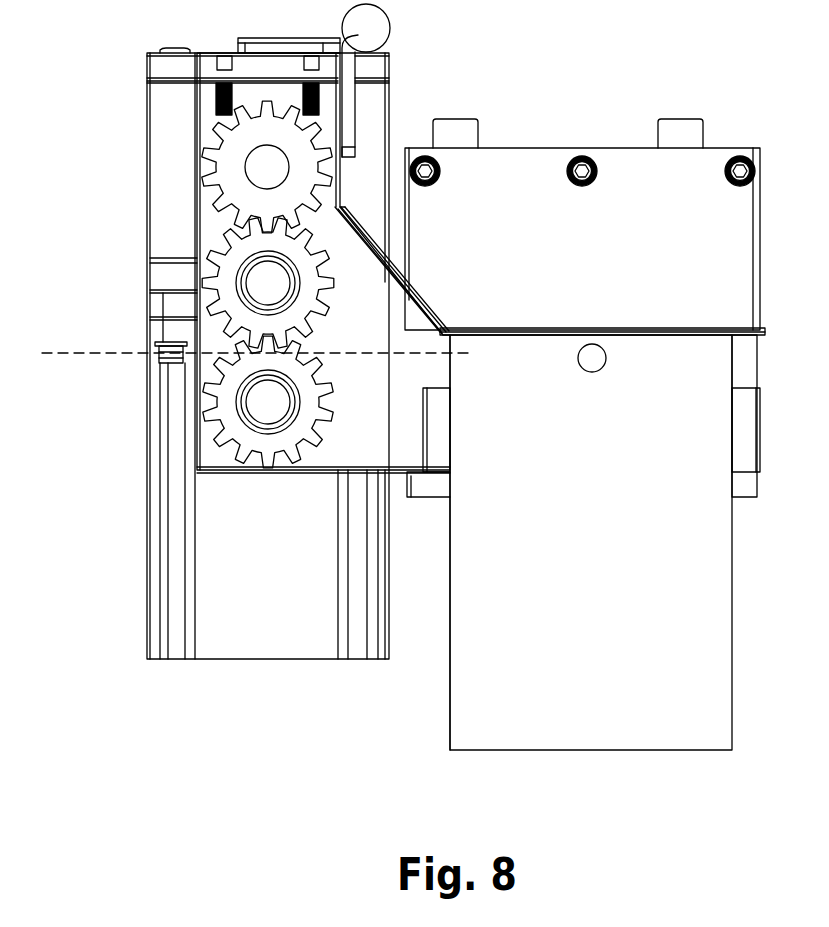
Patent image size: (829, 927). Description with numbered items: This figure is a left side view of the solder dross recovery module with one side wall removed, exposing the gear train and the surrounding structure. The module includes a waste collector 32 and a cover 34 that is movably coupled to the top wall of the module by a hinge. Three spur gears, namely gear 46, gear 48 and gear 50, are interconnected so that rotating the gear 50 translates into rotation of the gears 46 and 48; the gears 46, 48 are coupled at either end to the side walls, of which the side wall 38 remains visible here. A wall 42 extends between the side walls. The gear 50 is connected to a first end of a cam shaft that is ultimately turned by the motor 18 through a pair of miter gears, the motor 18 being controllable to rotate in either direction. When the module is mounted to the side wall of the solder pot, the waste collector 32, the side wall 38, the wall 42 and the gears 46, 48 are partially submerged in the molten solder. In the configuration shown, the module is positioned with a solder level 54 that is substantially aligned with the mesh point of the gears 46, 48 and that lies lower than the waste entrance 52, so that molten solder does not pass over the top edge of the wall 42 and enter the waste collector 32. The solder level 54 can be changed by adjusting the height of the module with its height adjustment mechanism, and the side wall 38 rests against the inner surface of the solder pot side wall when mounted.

The motor 18 is at (273, 628).
The waste collector 32 is at (712, 653).
The cover 34 is at (427, 303).
The side wall 38 is at (350, 452).
The wall 42 is at (450, 677).
The gear 46 is at (233, 427).
The gear 48 is at (237, 257).
The gear 50 is at (232, 163).
The waste entrance 52 is at (430, 345).
The solder level 54 is at (60, 353).